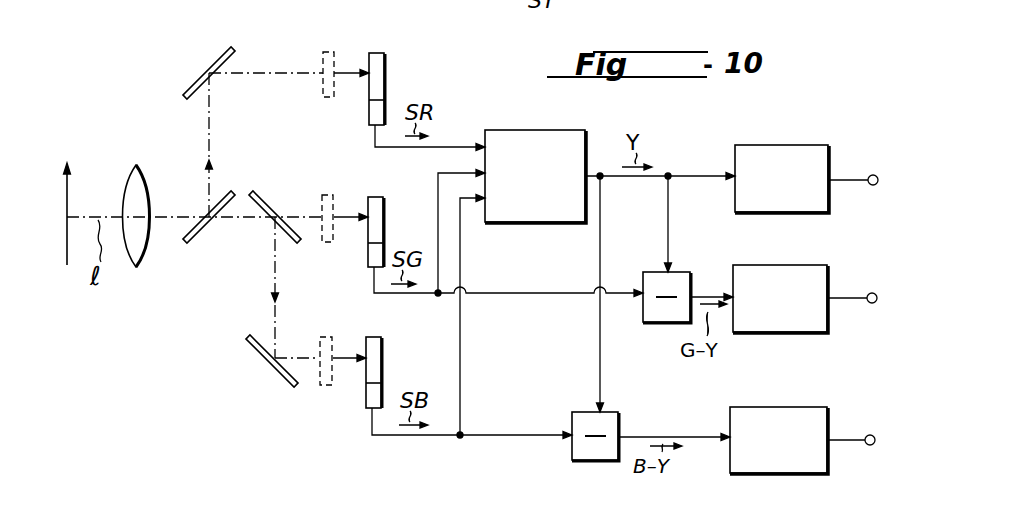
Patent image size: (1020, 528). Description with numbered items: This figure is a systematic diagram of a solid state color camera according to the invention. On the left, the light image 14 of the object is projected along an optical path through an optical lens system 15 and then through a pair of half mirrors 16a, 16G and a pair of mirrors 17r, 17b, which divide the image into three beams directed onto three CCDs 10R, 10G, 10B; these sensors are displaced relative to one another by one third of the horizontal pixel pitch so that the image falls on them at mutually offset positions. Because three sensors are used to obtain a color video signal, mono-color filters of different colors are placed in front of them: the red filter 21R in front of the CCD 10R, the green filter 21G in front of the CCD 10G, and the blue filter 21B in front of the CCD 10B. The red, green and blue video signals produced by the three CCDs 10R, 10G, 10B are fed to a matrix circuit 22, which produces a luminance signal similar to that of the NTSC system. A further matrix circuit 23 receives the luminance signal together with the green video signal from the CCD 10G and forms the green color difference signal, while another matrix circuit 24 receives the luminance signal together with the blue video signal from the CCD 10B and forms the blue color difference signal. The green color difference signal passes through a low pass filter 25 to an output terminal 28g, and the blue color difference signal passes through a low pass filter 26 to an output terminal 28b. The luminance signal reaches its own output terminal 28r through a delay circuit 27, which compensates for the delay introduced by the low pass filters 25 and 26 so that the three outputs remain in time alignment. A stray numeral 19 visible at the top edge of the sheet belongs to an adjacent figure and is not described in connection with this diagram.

The light image 14 is at (66, 248).
The optical lens system 15 is at (158, 152).
The half mirror 16a is at (203, 232).
The half mirror 16G is at (272, 196).
The mirror 17r is at (204, 62).
The mirror 17b is at (258, 360).
The R (red) filter 21R is at (323, 82).
The G (green) filter 21G is at (326, 243).
The B (blue) filter 21B is at (326, 386).
The CCD 10R is at (410, 38).
The CCD 10G is at (408, 188).
The CCD 10B is at (402, 328).
The matrix circuit 22 is at (531, 130).
The matrix circuit 23 is at (648, 272).
The matrix circuit 24 is at (613, 404).
The low pass filter 25 is at (772, 265).
The low pass filter 26 is at (770, 407).
The delay circuit 27 is at (781, 145).
The output terminal 28r is at (873, 175).
The output terminal 28g is at (873, 293).
The output terminal 28b is at (869, 435).
The signal processor (partial, from adjacent figure) 19 is at (583, 0).